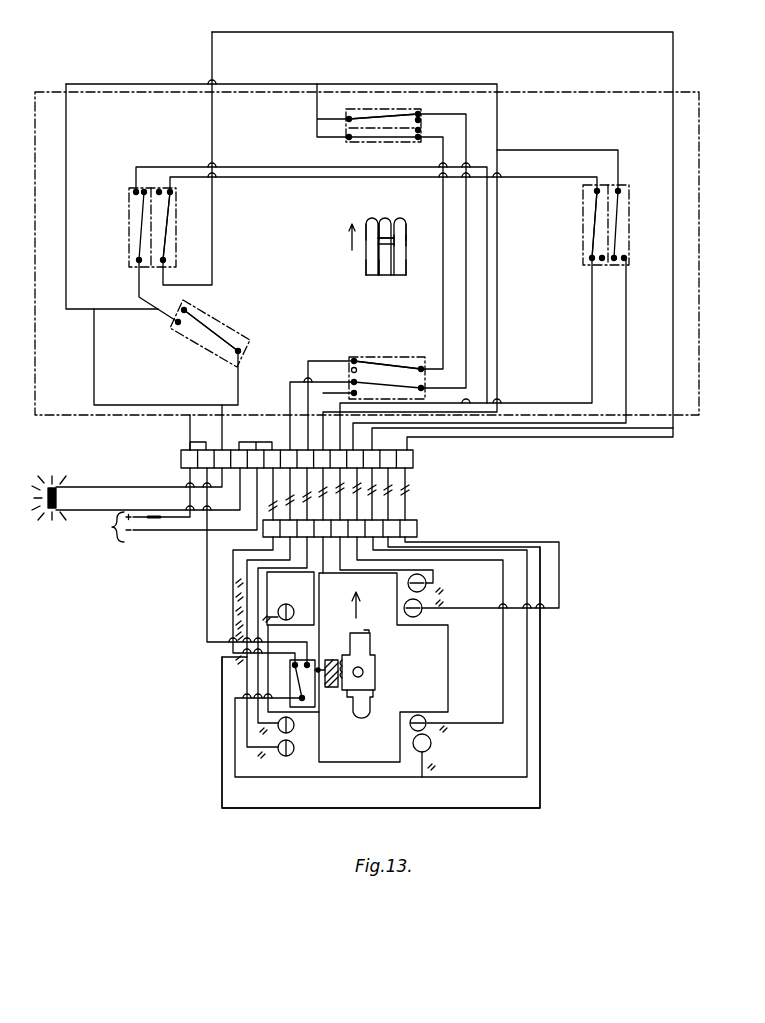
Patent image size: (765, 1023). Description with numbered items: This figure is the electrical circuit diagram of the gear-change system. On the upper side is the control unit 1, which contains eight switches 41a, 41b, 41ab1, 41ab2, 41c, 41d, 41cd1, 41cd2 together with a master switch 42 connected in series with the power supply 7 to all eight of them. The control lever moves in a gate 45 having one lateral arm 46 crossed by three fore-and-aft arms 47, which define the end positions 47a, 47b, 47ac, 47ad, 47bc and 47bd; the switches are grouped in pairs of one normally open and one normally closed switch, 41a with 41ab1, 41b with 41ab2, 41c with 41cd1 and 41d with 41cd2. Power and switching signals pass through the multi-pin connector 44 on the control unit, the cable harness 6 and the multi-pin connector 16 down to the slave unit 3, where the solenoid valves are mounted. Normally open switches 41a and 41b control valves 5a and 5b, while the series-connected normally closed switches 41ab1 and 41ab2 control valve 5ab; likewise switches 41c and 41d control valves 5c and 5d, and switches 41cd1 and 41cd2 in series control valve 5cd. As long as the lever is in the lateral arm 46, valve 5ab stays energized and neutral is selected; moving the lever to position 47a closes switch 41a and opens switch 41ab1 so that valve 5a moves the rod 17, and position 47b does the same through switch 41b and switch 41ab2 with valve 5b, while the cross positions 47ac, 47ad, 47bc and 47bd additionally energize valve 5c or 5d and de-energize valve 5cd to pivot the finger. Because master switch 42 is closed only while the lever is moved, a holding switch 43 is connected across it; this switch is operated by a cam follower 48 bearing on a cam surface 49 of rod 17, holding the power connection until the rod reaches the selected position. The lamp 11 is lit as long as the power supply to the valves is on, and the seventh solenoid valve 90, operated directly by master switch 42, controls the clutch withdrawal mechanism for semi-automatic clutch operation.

The control unit 1 is at (36, 360).
The indicator unit housing 3 is at (542, 712).
The solenoid valve 5a is at (292, 598).
The solenoid valve 5ab is at (294, 728).
The solenoid valve 5b is at (286, 757).
The solenoid valve 5c is at (427, 720).
The solenoid valve 5cd is at (426, 580).
The solenoid valve 5d is at (422, 612).
The cable harness 6 is at (410, 494).
The battery 7 is at (126, 527).
The lamp 11 is at (62, 486).
The multi-pin connector 16 is at (418, 522).
The rod 17 is at (370, 636).
The switch 41a is at (412, 108).
The switch 41ab1 is at (340, 140).
The switch 41ab2 is at (422, 360).
The switch 41b is at (352, 384).
The switch 41c is at (129, 248).
The switch 41cd1 is at (176, 242).
The switch 41cd2 is at (583, 226).
The switch 41d is at (630, 250).
The master switch 42 is at (203, 342).
The holding switch 43 is at (327, 662).
The multi-pin connector 44 is at (181, 458).
The gate 45 is at (408, 240).
The lateral arm 46 is at (385, 246).
The fore-and-aft arms 47 is at (410, 268).
The end position 47a is at (384, 220).
The end position 47ac is at (365, 222).
The end position 47ad is at (410, 212).
The end position 47b is at (383, 278).
The end position 47bc is at (366, 278).
The end position 47bd is at (402, 278).
The cam follower 48 is at (348, 698).
The cam surface 49 is at (345, 683).
The seventh solenoid valve 90 is at (431, 745).